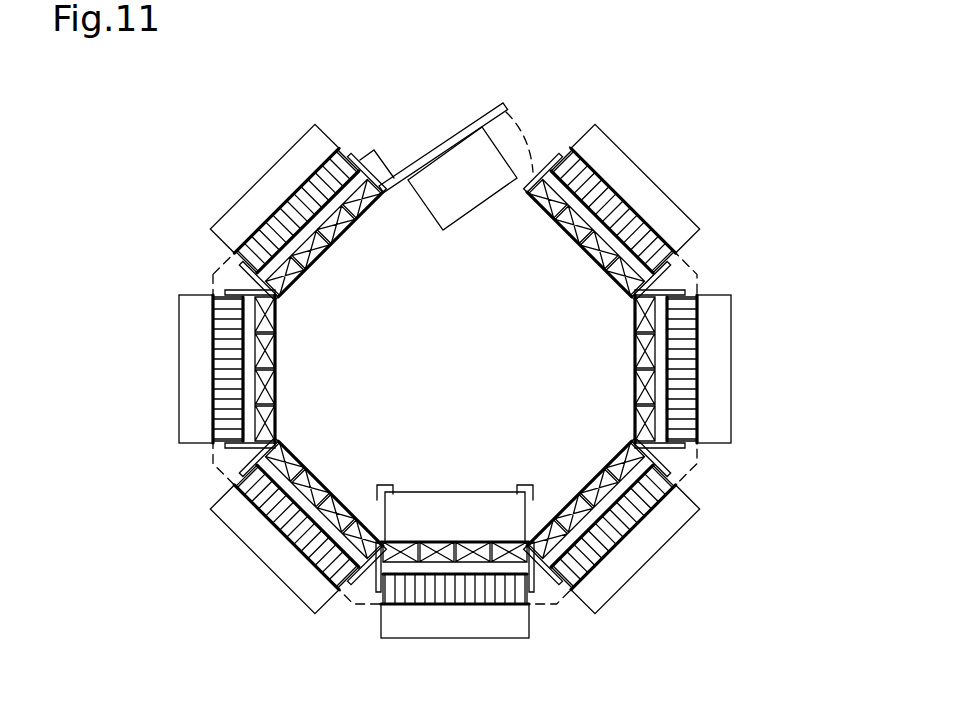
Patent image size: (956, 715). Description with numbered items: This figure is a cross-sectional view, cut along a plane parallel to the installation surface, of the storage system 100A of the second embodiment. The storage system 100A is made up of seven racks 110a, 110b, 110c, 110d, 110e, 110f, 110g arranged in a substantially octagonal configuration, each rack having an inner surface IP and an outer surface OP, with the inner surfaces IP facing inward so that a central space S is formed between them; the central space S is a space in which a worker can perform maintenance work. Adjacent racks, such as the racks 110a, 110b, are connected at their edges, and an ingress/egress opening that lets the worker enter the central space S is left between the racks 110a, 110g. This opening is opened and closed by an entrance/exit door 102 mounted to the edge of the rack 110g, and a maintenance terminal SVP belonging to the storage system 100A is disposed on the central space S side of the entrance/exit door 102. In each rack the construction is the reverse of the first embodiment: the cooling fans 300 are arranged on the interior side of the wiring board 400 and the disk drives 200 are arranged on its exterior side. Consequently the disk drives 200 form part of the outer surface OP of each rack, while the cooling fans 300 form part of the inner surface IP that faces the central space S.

The storage system 100A is at (446, 52).
The entrance/exit door 102 is at (408, 167).
The maintenance terminal SVP is at (492, 191).
The rack 110a is at (614, 135).
The rack 110b is at (733, 308).
The rack 110c is at (700, 515).
The rack 110d is at (387, 638).
The rack 110e is at (297, 597).
The rack 110f is at (179, 437).
The rack 110g is at (306, 132).
The wiring board 400 is at (288, 200).
The disk drives 200 is at (266, 250).
The cooling fans 300 is at (318, 253).
The outer surface OP is at (253, 247).
The inner surface IP is at (358, 213).
The central space S is at (512, 395).